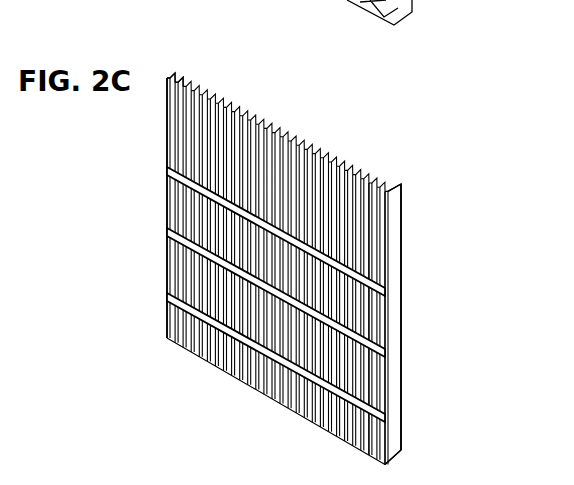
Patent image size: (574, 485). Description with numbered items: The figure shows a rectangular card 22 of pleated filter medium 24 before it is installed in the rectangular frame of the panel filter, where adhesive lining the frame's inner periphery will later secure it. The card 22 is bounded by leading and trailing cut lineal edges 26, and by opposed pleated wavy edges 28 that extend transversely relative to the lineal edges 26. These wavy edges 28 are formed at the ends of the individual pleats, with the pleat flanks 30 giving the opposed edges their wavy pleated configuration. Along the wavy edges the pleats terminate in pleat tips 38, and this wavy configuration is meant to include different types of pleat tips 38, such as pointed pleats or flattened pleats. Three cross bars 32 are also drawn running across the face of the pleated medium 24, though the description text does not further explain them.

The rectangular card 22 is at (413, 180).
The pleated filter medium 24 is at (268, 180).
The lineal edges 26 is at (167, 78).
The pleated wavy edges 28 is at (312, 150).
The pleat flanks 30 is at (176, 76).
The cross bars 32 is at (386, 420).
The pleat tips 38 is at (367, 178).